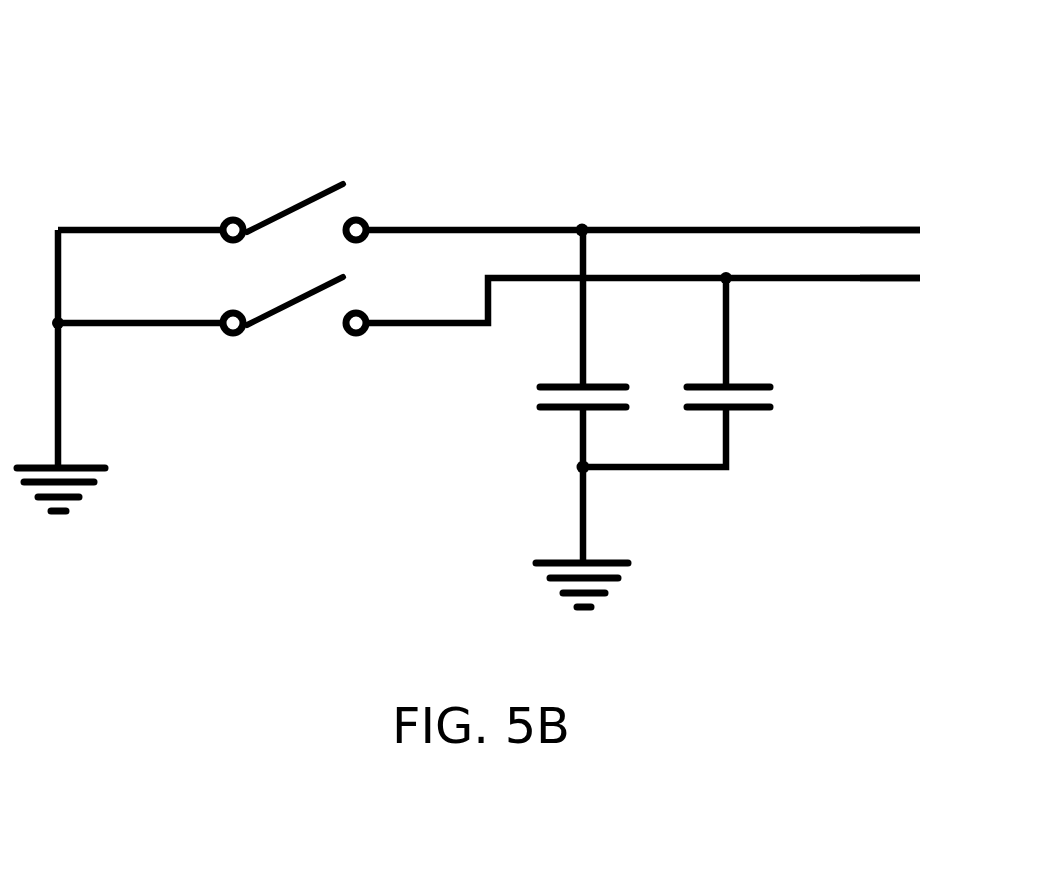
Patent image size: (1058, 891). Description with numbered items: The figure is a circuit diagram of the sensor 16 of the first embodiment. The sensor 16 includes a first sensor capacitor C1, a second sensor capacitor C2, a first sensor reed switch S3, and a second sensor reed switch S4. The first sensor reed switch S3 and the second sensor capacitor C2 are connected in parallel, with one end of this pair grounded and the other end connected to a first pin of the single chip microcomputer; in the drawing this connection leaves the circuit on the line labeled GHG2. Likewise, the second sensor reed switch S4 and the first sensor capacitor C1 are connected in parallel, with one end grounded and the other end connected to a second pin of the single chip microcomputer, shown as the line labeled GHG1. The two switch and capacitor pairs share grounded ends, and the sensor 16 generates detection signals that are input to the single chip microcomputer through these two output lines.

The sensor 16 is at (160, 148).
The first sensor reed switch S3 is at (294, 192).
The second sensor reed switch S4 is at (294, 287).
The first sensor capacitor C1 is at (757, 400).
The second sensor capacitor C2 is at (610, 400).
The gate high voltage line GHG1 is at (880, 256).
The gate high voltage line GHG2 is at (880, 208).